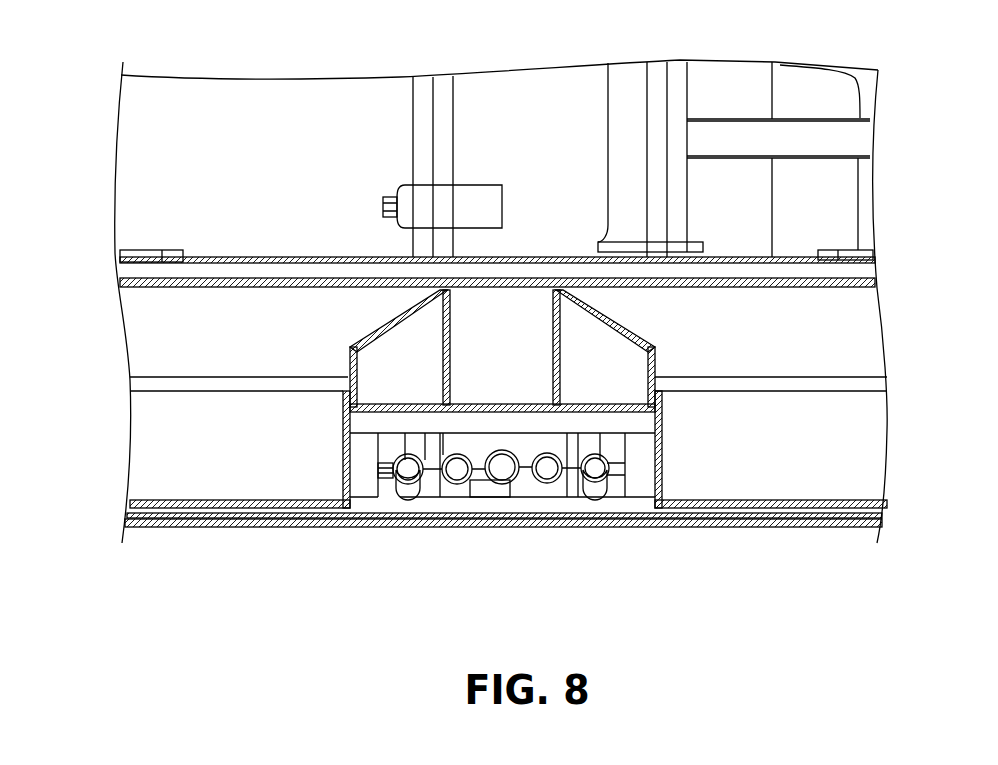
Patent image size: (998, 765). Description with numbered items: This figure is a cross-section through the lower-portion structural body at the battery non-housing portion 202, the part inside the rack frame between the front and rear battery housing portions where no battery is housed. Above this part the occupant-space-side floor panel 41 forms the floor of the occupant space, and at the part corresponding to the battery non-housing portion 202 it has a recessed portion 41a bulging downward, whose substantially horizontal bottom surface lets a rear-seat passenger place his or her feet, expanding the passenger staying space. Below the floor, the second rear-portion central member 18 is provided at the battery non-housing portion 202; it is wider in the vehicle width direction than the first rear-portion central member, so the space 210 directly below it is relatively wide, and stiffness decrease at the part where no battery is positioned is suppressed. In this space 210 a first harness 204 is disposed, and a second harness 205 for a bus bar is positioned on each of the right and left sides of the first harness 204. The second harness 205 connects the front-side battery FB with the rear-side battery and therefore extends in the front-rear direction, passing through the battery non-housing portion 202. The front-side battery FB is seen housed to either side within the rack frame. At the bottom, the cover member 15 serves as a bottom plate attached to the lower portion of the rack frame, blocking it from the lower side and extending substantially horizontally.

The second rear-portion central member 18 is at (373, 323).
The occupant-space-side floor panel 41 is at (850, 280).
The recessed portion 41a is at (862, 503).
The battery non-housing portion 202 is at (143, 338).
The space 210 is at (632, 427).
The first harness 204 is at (543, 492).
The second harness 205 is at (392, 490).
The cover member 15 is at (842, 527).
The front-side battery FB is at (148, 422).